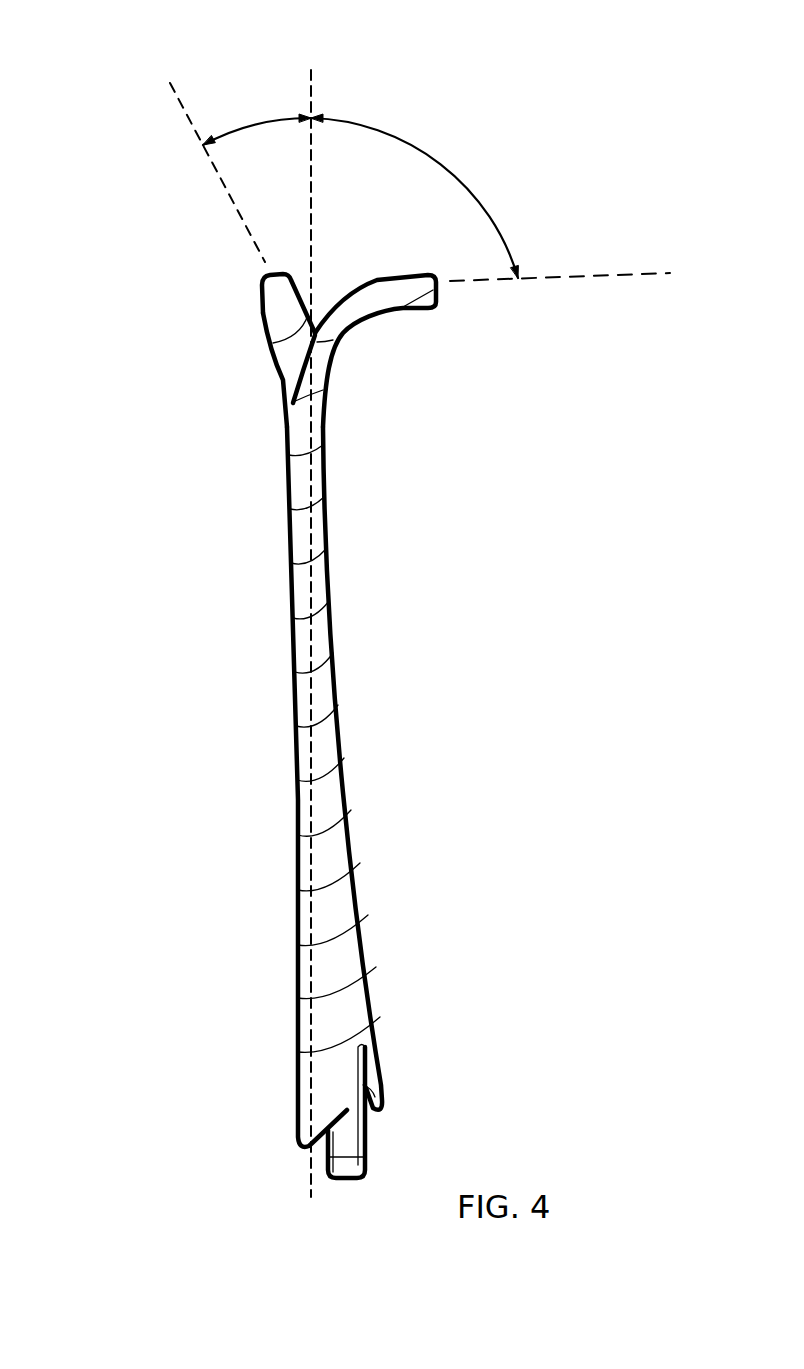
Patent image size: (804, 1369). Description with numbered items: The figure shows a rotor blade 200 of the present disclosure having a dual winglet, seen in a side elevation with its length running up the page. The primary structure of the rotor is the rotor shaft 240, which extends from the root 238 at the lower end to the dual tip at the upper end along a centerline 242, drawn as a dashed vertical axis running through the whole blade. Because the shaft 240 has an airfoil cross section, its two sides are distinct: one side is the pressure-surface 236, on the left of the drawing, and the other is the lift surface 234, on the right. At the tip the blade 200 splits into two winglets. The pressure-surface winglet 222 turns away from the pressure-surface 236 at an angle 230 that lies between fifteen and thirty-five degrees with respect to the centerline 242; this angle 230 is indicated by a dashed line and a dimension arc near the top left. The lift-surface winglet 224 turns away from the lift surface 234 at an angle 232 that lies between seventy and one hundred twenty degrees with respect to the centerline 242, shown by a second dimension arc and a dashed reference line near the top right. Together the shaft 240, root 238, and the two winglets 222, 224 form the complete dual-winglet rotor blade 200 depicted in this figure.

The rotor blade 200 is at (121, 36).
The pressure-surface winglet 222 is at (278, 307).
The lift-surface winglet 224 is at (380, 298).
The angle 230 is at (227, 130).
The angle 232 is at (447, 165).
The lift surface 234 is at (348, 683).
The pressure-surface 236 is at (285, 710).
The root 238 is at (320, 1073).
The rotor shaft 240 is at (322, 812).
The centerline 242 is at (313, 88).